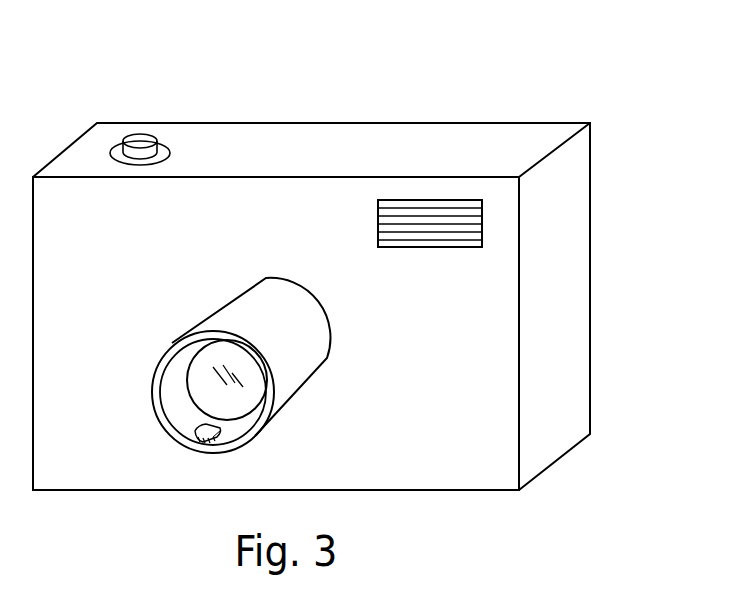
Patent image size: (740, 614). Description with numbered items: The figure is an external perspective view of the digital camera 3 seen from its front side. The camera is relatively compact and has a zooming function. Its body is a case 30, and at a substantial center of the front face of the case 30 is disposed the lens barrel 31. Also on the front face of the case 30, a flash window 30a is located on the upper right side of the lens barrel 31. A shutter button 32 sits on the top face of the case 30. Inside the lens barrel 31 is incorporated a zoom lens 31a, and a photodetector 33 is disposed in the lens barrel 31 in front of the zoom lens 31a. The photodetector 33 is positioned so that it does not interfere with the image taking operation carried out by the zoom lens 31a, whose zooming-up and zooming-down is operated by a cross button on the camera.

The digital camera 3 is at (320, 78).
The case 30 is at (557, 243).
The flash window 30a is at (408, 247).
The lens barrel 31 is at (292, 350).
The zoom lens 31a is at (197, 367).
The shutter button 32 is at (143, 142).
The photodetector 33 is at (222, 432).